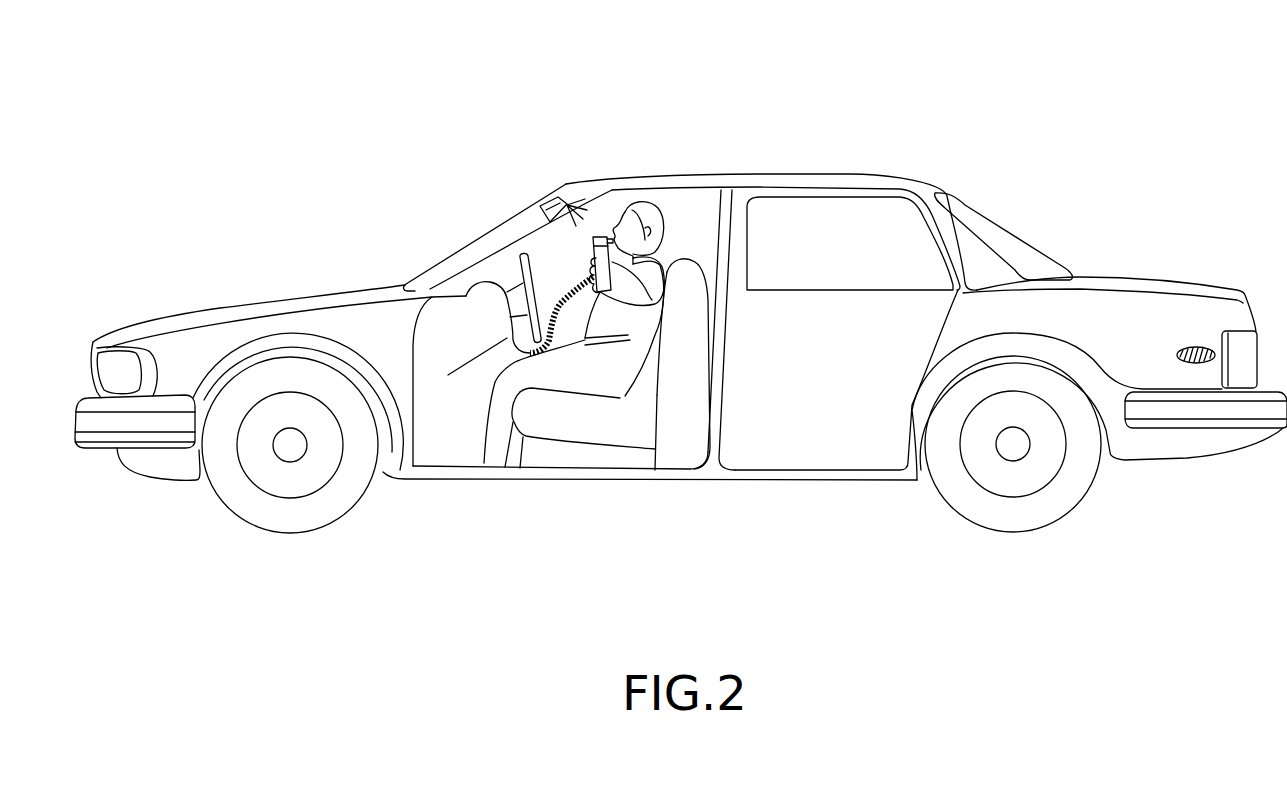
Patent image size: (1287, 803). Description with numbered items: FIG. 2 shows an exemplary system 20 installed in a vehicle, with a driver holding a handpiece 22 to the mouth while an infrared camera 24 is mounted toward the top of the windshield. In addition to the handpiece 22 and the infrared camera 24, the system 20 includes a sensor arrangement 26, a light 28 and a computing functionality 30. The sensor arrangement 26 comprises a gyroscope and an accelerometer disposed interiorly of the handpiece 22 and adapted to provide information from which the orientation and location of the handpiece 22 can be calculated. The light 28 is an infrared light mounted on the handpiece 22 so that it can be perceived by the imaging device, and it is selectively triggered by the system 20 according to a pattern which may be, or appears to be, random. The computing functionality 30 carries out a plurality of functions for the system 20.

The system 20 is at (727, 119).
The handpiece 22 is at (590, 241).
The infrared camera 24 is at (563, 188).
The sensor arrangement 26 is at (601, 236).
The light 28 is at (610, 241).
The computing functionality 30 is at (561, 315).